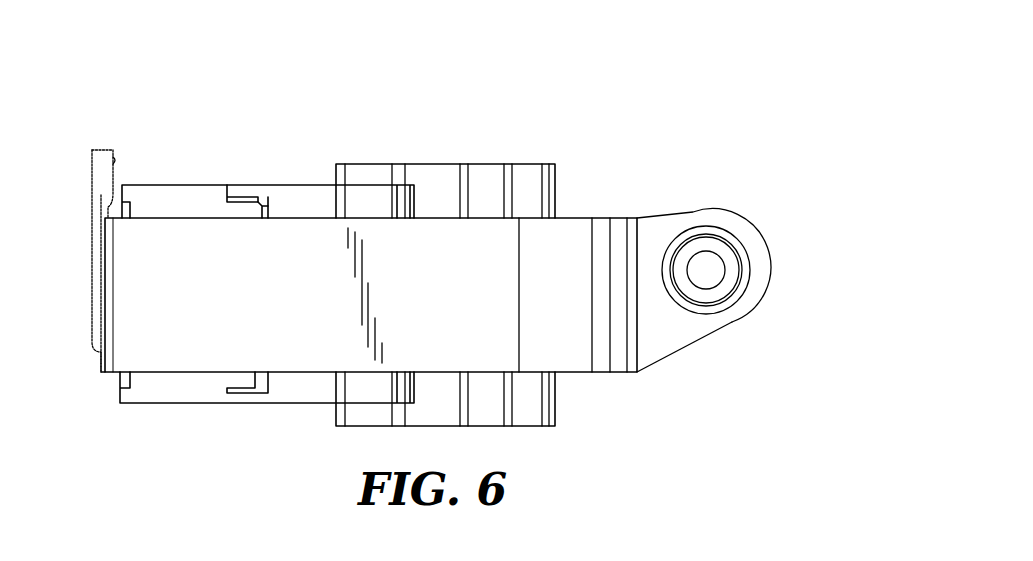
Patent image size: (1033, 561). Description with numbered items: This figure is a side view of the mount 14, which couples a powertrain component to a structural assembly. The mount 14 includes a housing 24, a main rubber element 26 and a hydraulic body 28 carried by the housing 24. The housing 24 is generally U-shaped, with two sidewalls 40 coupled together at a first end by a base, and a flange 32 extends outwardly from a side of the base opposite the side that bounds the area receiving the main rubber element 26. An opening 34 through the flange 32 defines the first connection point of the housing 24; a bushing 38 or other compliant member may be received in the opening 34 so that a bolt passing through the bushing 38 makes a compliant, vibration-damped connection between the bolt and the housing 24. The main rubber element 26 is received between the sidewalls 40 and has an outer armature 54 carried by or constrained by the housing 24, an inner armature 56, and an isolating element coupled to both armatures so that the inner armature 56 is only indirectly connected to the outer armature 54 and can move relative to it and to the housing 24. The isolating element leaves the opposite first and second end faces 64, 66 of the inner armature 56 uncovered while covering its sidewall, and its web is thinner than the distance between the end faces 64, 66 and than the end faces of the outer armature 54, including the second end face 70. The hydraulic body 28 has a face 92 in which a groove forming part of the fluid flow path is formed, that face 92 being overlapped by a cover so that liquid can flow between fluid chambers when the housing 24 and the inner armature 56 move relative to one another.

The mount 14 is at (677, 114).
The housing 24 is at (698, 207).
The main rubber element (MRE) 26 is at (572, 149).
The hydraulic body 28 is at (182, 185).
The flange 32 is at (650, 343).
The opening 34 is at (708, 275).
The bushing 38 is at (725, 258).
The sidewalls 40 is at (193, 348).
The outer armature 54 is at (300, 183).
The inner armature 56 is at (432, 153).
The first end face 64 is at (479, 163).
The second end face 66 is at (497, 428).
The second end face 70 is at (262, 218).
The face 92 is at (263, 185).